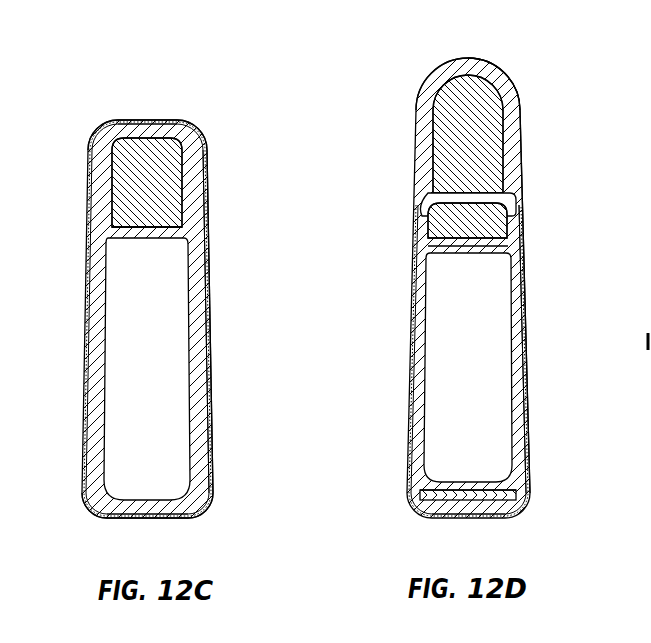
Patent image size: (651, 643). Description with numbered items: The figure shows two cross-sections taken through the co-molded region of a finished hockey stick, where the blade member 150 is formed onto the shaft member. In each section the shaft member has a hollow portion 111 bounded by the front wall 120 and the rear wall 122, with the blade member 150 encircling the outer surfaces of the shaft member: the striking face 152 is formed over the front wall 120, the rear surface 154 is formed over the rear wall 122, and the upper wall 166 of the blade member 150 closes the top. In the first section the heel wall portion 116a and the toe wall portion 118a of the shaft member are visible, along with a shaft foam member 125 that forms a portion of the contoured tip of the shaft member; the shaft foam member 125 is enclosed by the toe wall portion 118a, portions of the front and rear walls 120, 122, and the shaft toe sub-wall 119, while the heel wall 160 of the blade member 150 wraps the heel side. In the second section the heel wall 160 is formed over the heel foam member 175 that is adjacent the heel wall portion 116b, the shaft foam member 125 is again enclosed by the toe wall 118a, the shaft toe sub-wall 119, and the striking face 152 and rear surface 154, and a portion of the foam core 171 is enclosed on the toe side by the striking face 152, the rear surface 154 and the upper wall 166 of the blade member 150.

In FIG. 12C, the hollow portion 111 is at (148, 405).
In FIG. 12D, the hollow portion 111 is at (463, 358).
In FIG. 12C, the heel wall portion 116a is at (130, 512).
In FIG. 12D, the heel wall portion 116b is at (473, 482).
In FIG. 12C, the toe wall portion 118a is at (147, 127).
In FIG. 12D, the toe wall portion 118a is at (461, 198).
In FIG. 12C, the shaft toe sub-wall 119 is at (143, 232).
In FIG. 12D, the shaft toe sub-wall 119 is at (463, 247).
In FIG. 12C, the front wall 120 is at (98, 198).
In FIG. 12D, the front wall 120 is at (427, 337).
In FIG. 12C, the rear wall 122 is at (198, 308).
In FIG. 12D, the rear wall 122 is at (512, 365).
In FIG. 12C, the shaft foam member 125 is at (155, 177).
In FIG. 12D, the shaft foam member 125 is at (493, 219).
In FIG. 12D, the blade member 150 is at (493, 75).
In FIG. 12C, the striking face 152 is at (88, 310).
In FIG. 12D, the striking face 152 is at (412, 365).
In FIG. 12C, the rear surface 154 is at (208, 253).
In FIG. 12D, the rear surface 154 is at (527, 333).
In FIG. 12C, the heel wall 160 is at (160, 517).
In FIG. 12D, the heel wall 160 is at (470, 515).
In FIG. 12C, the upper wall 166 is at (165, 118).
In FIG. 12D, the upper wall 166 is at (438, 72).
In FIG. 12D, the foam core 171 is at (482, 137).
In FIG. 12D, the heel foam member 175 is at (440, 498).